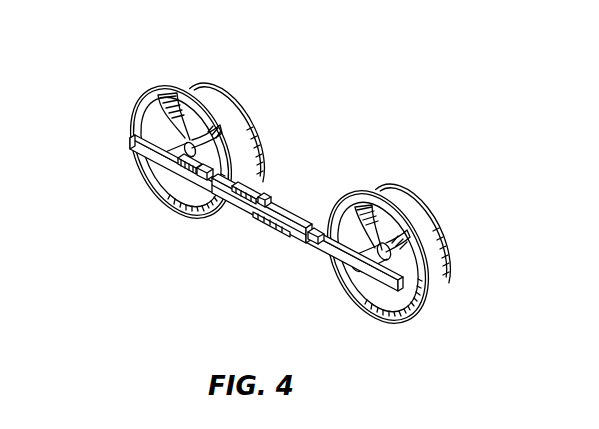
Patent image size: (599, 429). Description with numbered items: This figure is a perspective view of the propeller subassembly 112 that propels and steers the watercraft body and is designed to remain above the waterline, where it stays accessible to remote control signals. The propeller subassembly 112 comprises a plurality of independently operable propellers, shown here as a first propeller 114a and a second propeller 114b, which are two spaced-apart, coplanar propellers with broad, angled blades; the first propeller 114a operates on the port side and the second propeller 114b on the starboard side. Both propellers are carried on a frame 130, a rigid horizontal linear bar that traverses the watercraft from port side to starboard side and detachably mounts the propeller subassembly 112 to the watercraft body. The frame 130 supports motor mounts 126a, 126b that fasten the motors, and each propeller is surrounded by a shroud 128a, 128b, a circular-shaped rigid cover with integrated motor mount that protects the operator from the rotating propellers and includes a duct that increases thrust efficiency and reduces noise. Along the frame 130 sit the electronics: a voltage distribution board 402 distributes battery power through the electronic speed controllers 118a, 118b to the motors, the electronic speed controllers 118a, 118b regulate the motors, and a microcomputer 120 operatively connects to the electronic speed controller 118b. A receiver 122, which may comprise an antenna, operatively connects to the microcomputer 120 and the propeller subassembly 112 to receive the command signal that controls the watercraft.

The propeller subassembly 112 is at (344, 60).
The first propeller 114a is at (142, 98).
The second propeller 114b is at (434, 265).
The electronic speed controller 118a is at (194, 146).
The electronic speed controller 118b is at (312, 248).
The microcomputer 120 is at (272, 190).
The receiver 122 is at (245, 214).
The motor mount 126a is at (160, 164).
The motor mount 126b is at (352, 268).
The shroud 128a is at (197, 85).
The shroud 128b is at (410, 200).
The frame 130 is at (130, 140).
The voltage distribution board 402 is at (258, 212).